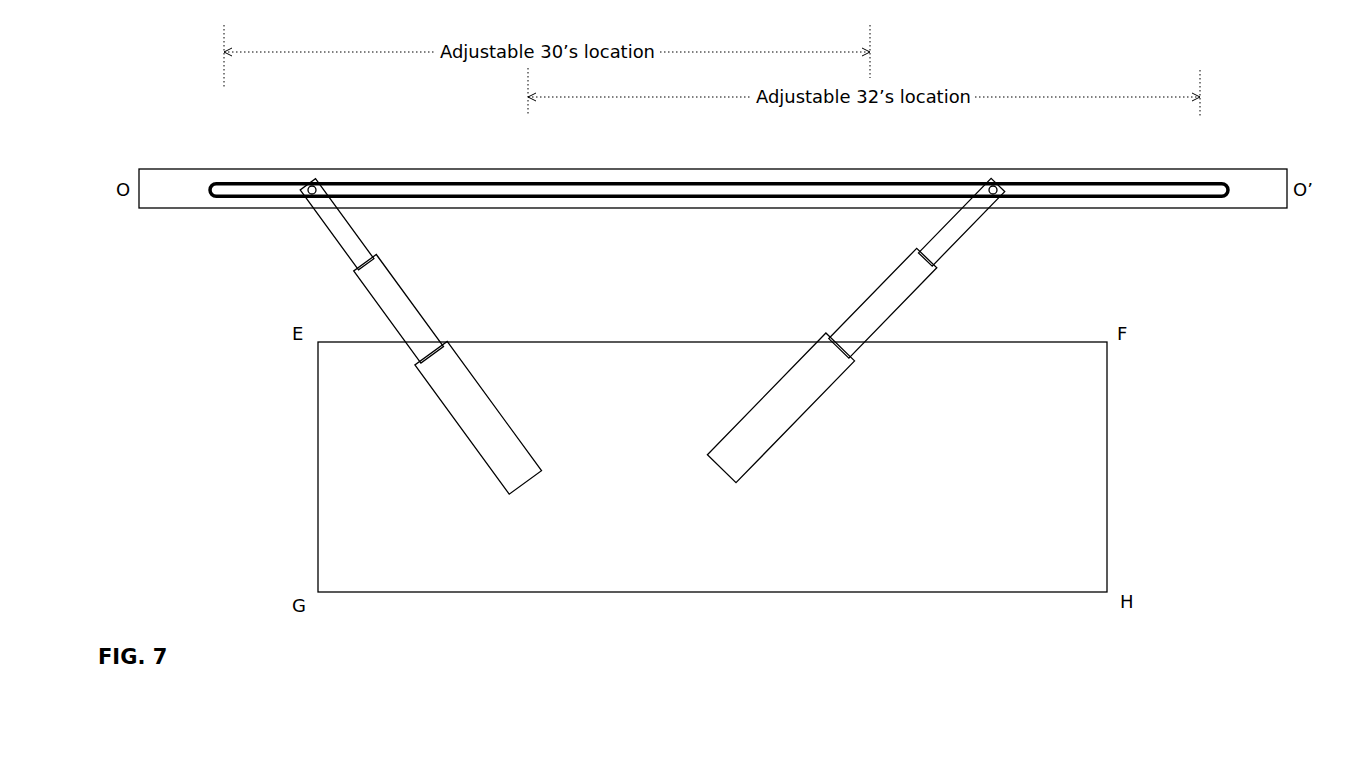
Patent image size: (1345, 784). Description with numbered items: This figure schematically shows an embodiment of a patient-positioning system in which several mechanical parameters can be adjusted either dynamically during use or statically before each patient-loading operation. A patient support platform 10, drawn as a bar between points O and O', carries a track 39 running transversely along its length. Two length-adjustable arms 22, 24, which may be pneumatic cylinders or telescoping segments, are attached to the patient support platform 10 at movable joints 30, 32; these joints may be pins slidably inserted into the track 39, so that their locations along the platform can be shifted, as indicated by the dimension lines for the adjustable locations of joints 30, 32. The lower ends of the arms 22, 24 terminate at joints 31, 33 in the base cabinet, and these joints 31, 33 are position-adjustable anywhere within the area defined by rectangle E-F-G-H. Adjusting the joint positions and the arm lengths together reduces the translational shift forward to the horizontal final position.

The patient support platform 10 is at (704, 133).
The tracks 39 is at (1212, 170).
The movable joint 30 is at (310, 181).
The movable joint 32 is at (994, 181).
The joint 31 is at (519, 469).
The joint 33 is at (725, 463).
The arm 22 is at (319, 321).
The arm 24 is at (1011, 317).